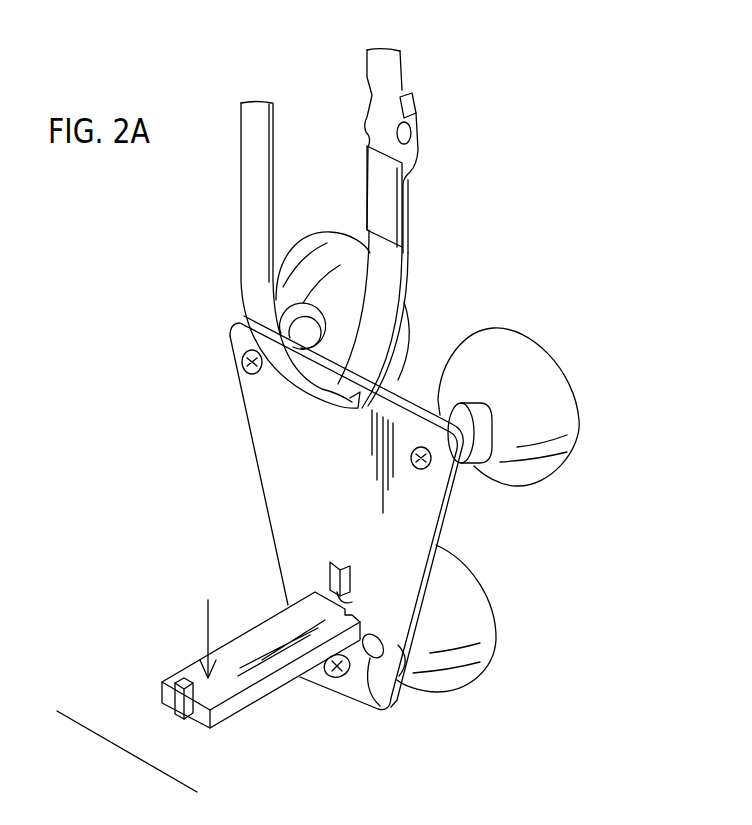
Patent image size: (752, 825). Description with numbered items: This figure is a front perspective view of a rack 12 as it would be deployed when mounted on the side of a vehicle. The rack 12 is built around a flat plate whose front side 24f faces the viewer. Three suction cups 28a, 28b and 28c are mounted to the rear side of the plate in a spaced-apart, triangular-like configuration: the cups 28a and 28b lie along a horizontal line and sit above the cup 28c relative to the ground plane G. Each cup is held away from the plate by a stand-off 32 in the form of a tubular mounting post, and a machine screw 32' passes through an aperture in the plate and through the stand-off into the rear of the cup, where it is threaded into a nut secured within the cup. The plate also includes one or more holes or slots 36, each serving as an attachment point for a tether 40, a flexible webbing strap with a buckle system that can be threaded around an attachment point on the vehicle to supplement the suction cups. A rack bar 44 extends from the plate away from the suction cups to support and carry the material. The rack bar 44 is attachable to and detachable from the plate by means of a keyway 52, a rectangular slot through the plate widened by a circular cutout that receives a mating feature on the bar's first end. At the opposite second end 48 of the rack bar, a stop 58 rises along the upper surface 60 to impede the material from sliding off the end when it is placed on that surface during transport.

The rack 12 is at (528, 239).
The front side of plate 24f is at (336, 513).
The suction cup 28a is at (327, 263).
The suction cup 28b is at (519, 375).
The suction cup 28c is at (455, 601).
The stand-off 32 is at (493, 427).
The fastener 32' is at (460, 486).
The hole or slot 36 is at (348, 392).
The tether 40 is at (260, 192).
The rack bar 44 is at (253, 640).
The second end of rack bar 48 is at (200, 712).
The keyway 52 is at (345, 565).
The stop 58 is at (180, 705).
The upper surface of rack bar 60 is at (207, 609).
The ground plane G is at (84, 724).